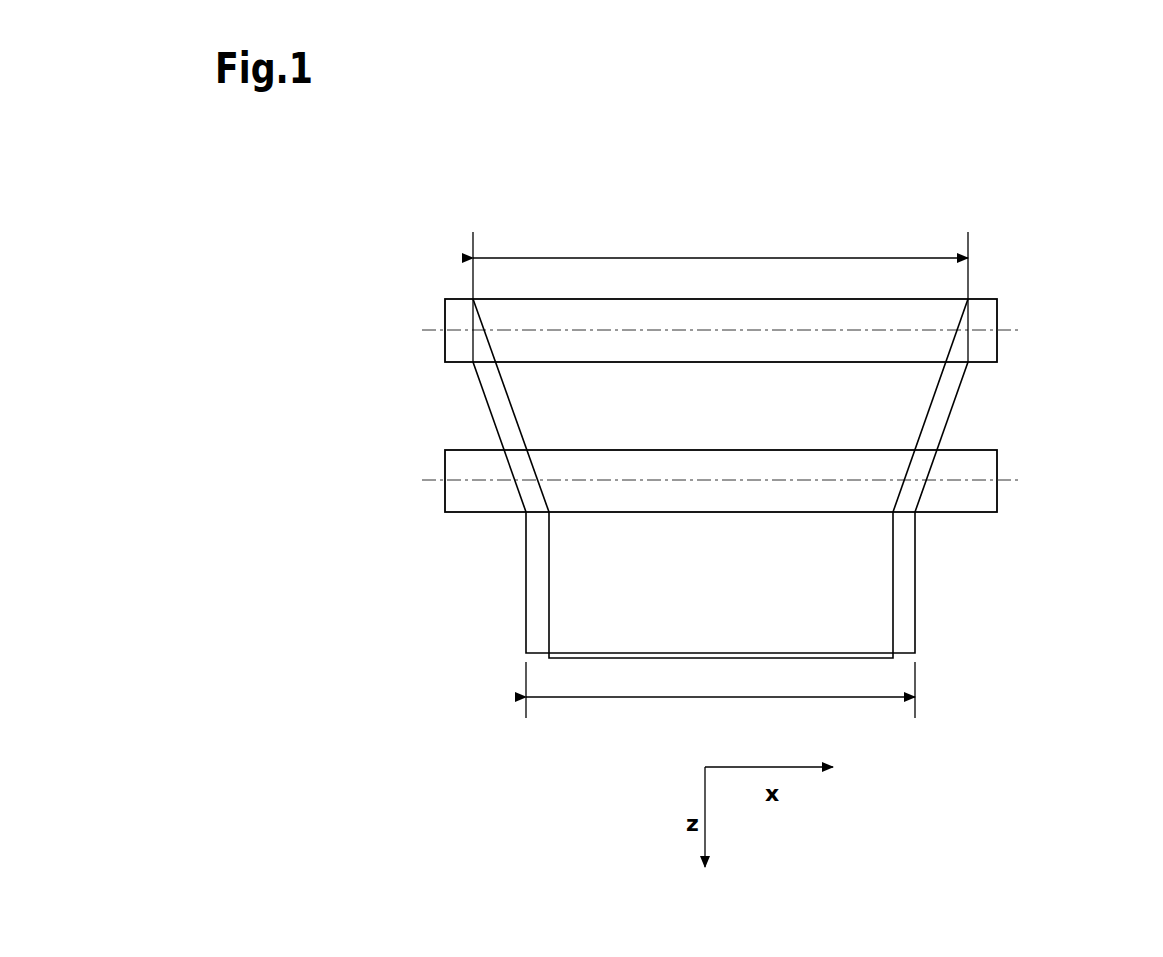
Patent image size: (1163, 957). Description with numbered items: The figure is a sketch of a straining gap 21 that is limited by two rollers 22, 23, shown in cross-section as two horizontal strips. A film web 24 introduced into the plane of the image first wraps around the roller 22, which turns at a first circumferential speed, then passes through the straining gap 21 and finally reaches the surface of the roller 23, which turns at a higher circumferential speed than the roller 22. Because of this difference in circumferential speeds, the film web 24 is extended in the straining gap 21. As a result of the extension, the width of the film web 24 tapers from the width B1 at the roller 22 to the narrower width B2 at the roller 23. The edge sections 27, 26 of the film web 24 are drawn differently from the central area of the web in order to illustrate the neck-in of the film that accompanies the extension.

The straining gap 21 is at (463, 413).
The roller 22 is at (447, 325).
The roller 23 is at (455, 512).
The film web 24 is at (819, 603).
The edge section 26 is at (908, 572).
The edge section 27 is at (533, 617).
The width B1 is at (720, 287).
The width B2 is at (720, 700).